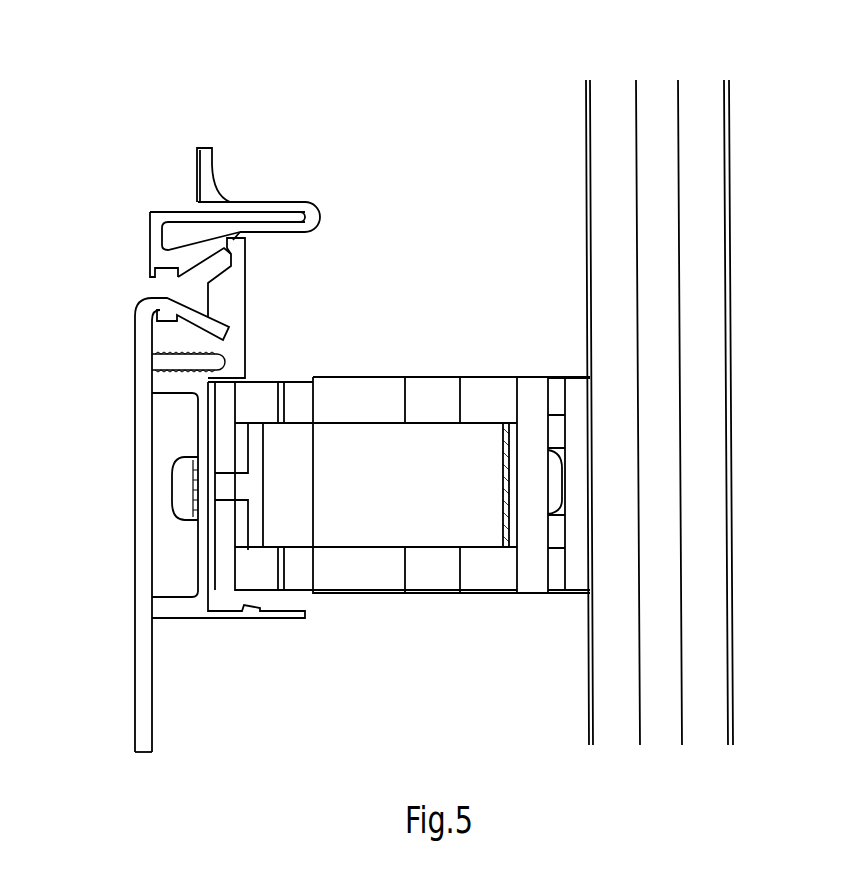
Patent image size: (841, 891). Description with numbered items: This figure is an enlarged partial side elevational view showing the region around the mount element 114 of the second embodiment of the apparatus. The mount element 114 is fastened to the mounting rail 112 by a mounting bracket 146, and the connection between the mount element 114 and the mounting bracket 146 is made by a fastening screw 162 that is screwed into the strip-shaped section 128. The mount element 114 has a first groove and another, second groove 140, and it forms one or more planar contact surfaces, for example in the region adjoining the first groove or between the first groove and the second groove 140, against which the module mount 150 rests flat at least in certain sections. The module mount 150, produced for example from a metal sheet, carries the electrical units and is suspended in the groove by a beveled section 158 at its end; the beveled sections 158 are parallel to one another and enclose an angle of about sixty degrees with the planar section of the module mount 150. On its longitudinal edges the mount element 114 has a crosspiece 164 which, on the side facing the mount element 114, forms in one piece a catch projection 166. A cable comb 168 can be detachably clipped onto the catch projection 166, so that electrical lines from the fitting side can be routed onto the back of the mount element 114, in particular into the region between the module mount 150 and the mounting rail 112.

The mounting rail 112 is at (728, 460).
The mount element 114 is at (270, 293).
The strip-shaped section 128 is at (198, 422).
The second groove 140 is at (192, 362).
The mounting bracket 146 is at (493, 593).
The module mount 150 is at (152, 722).
The beveled section 158 is at (184, 305).
The fastening screw 162 is at (173, 495).
The crosspiece 164 is at (170, 213).
The catch projection 166 is at (243, 607).
The cable comb 168 is at (270, 205).